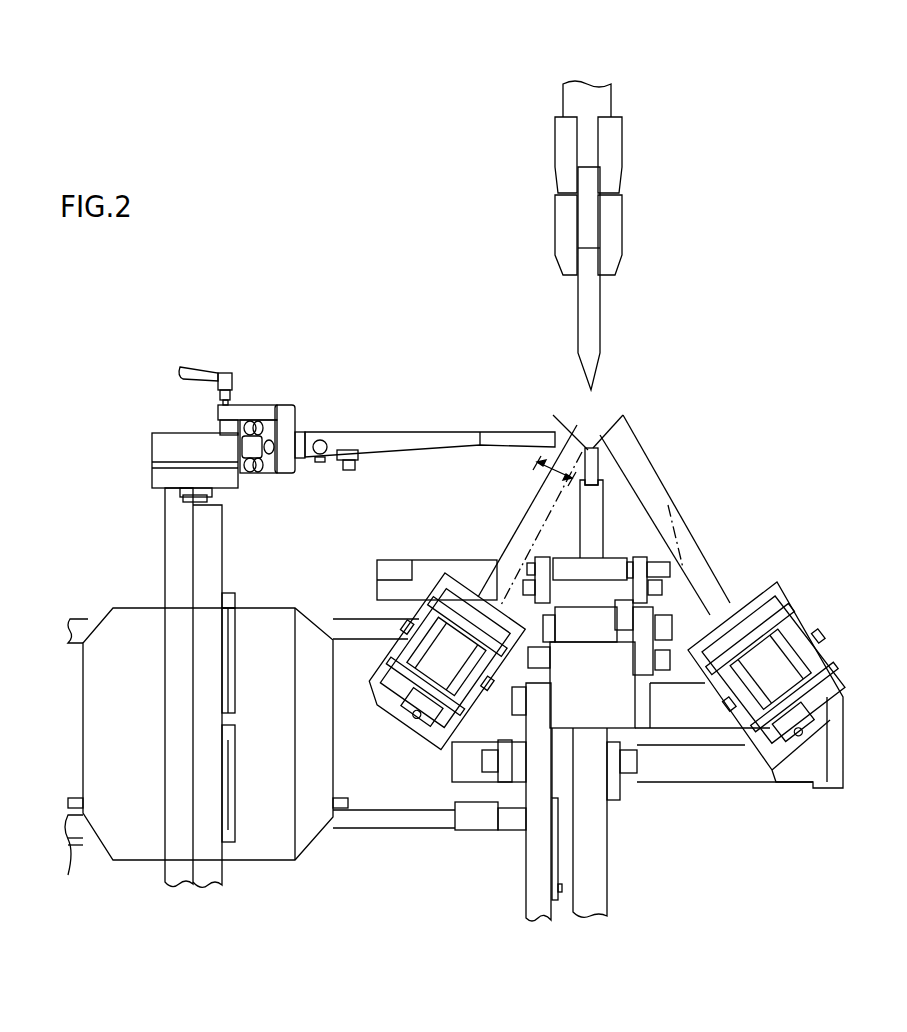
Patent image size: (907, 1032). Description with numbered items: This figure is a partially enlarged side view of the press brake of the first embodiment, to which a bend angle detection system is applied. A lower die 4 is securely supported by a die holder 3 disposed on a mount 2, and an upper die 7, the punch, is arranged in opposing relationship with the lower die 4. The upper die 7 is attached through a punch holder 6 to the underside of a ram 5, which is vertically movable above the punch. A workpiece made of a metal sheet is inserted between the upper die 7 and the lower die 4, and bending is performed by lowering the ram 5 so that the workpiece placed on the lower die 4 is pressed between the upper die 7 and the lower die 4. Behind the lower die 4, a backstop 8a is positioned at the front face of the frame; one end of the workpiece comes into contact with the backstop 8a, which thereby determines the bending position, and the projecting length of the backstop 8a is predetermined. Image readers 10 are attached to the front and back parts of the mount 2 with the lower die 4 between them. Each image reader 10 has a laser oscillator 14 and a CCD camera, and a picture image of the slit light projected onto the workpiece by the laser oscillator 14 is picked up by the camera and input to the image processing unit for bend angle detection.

The mount 2 is at (613, 560).
The die holder 3 is at (595, 508).
The lower die 4 is at (592, 462).
The ram 5 is at (602, 99).
The punch holder 6 is at (612, 223).
The upper die 7 is at (592, 323).
The backstop 8a is at (400, 440).
The image reader 10 is at (400, 737).
The laser oscillator 14 is at (432, 692).